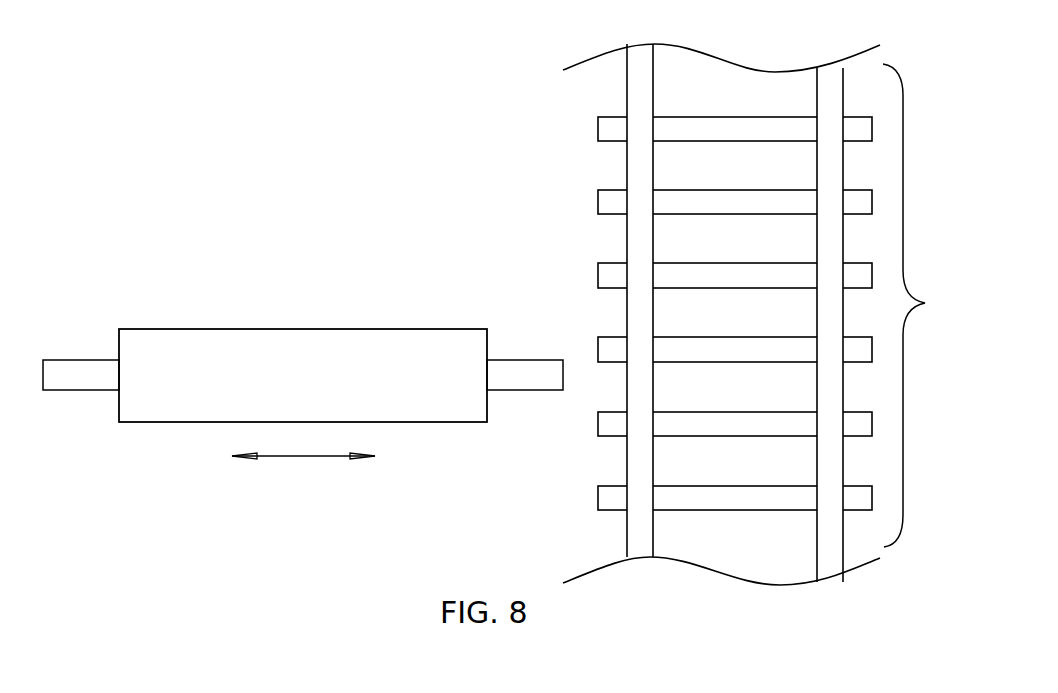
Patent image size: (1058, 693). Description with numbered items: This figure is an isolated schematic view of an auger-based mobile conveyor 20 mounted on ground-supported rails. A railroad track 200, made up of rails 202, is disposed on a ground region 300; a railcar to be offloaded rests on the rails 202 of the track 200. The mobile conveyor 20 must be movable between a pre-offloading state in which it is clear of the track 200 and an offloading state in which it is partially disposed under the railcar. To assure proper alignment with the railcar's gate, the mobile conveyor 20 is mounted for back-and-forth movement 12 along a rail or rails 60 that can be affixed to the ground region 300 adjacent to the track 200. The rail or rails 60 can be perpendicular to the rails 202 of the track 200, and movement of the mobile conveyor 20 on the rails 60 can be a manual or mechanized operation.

The ground region 300 is at (398, 182).
The mobile conveyor 20 is at (302, 329).
The rail 60 is at (73, 373).
The back-and-forth movement 12 is at (298, 458).
The railroad track 200 is at (740, 314).
The rails 202 is at (635, 163).